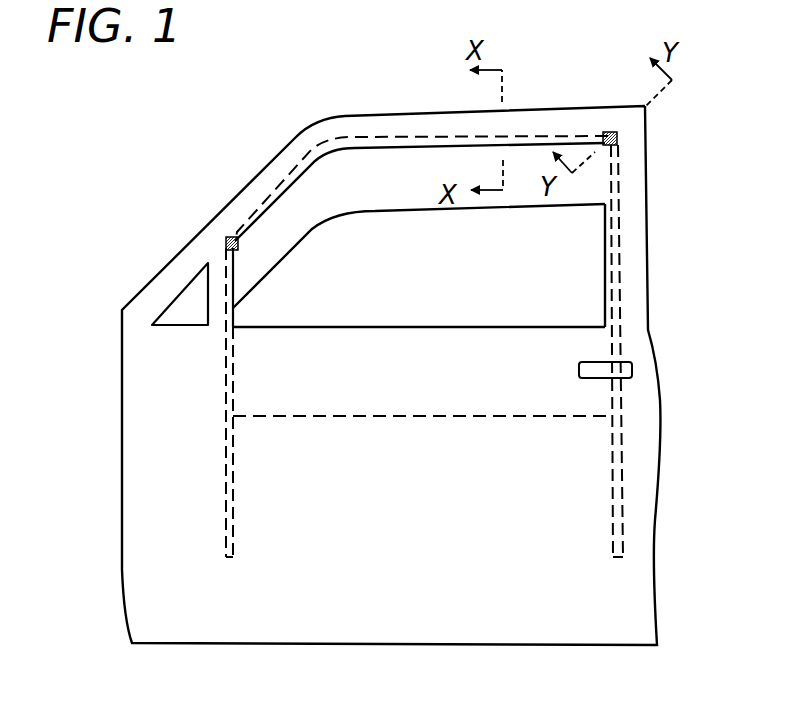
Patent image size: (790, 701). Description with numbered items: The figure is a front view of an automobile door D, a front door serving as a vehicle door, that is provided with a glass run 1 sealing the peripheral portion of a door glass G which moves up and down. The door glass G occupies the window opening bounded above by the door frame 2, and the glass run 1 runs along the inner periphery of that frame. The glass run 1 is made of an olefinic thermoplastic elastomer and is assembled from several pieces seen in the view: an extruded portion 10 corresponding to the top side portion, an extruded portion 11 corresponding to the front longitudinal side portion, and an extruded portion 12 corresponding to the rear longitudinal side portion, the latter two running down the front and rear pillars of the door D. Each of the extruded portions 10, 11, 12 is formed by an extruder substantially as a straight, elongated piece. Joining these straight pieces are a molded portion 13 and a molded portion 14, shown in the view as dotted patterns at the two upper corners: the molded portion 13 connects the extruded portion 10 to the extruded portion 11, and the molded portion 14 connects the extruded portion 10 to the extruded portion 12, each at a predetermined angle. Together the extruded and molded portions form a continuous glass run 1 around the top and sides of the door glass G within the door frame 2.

The glass run 1 is at (421, 116).
The door frame 2 is at (647, 191).
The extruded portion 10 is at (345, 135).
The extruded portion 11 is at (226, 460).
The extruded portion 12 is at (618, 297).
The molded portion 13 is at (230, 240).
The molded portion 14 is at (614, 138).
The door glass G is at (405, 418).
The automobile door D is at (552, 80).